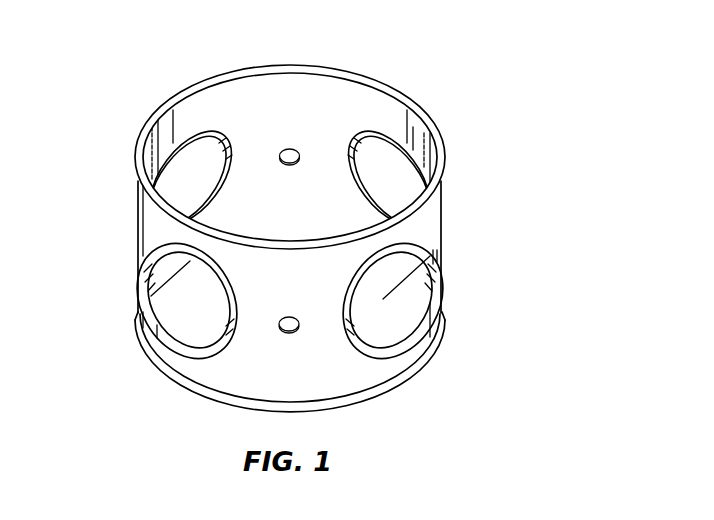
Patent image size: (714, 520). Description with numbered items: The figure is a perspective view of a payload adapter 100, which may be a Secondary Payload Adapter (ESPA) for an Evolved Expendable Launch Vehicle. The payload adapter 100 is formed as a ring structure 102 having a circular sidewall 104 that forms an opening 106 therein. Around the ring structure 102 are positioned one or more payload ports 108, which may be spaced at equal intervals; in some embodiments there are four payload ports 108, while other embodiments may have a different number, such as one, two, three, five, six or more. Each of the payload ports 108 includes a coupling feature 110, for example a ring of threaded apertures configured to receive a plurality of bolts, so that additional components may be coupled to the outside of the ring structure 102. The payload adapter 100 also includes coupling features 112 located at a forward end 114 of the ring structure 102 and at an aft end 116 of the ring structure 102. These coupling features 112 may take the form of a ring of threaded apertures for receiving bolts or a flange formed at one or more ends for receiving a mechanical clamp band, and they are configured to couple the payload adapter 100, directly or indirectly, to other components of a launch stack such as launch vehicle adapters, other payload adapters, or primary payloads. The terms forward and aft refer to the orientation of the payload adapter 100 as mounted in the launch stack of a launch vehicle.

The payload adapter 100 is at (458, 86).
The ring structure 102 is at (160, 218).
The circular sidewall 104 is at (425, 220).
The opening 106 is at (255, 126).
The payload port 108 is at (152, 302).
The coupling feature 110 is at (440, 268).
The coupling features 112 is at (353, 73).
The forward end 114 is at (148, 130).
The aft end 116 is at (163, 375).